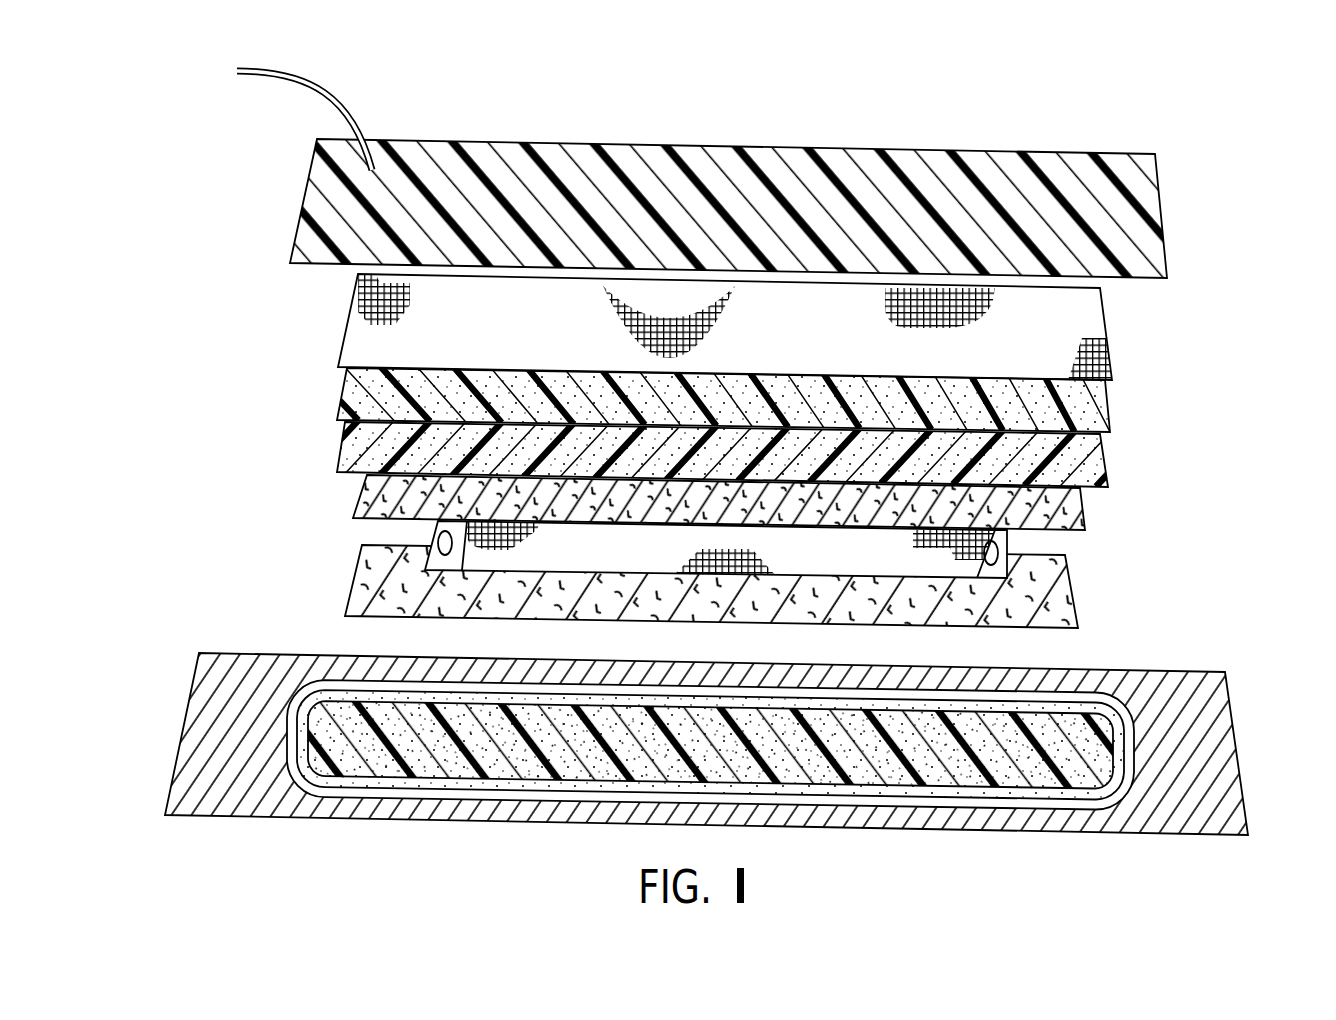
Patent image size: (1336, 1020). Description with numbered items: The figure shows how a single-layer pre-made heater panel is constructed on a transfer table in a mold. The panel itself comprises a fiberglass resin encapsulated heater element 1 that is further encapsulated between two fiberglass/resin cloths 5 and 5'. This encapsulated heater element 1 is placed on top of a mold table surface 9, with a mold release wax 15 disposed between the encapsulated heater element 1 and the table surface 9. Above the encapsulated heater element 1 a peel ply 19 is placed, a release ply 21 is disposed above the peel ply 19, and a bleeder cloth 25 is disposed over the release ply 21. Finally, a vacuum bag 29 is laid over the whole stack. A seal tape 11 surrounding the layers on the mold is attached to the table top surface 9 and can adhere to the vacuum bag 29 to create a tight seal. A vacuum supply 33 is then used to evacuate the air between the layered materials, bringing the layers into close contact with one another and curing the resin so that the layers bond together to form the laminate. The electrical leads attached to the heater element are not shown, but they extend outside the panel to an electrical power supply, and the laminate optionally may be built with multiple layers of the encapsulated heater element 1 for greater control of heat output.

The fiberglass resin encapsulated heater element 1 is at (1002, 531).
The fiberglass/resin cloth 5 is at (744, 586).
The fiberglass/resin cloth 5' is at (746, 505).
The mold table surface 9 is at (1230, 717).
The seal tape 11 is at (1162, 673).
The mold release wax 15 is at (1082, 715).
The peel ply 19 is at (1050, 460).
The release ply 21 is at (1063, 411).
The bleeder cloth 25 is at (1063, 338).
The vacuum bag 29 is at (1117, 206).
The vacuum supply 33 is at (322, 82).